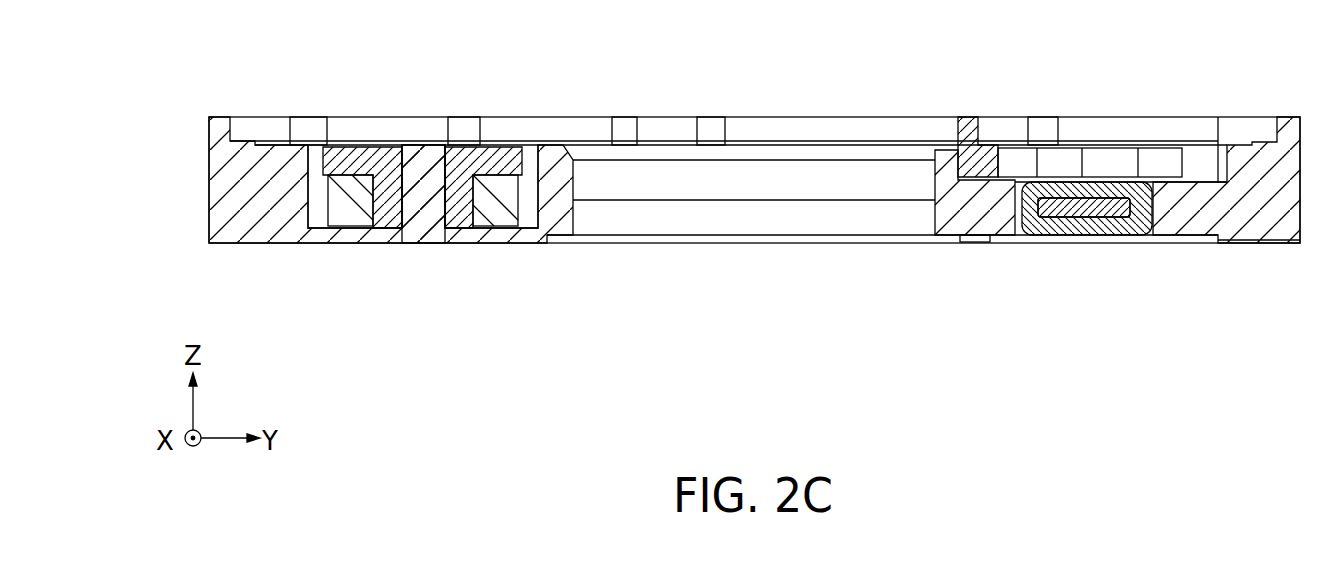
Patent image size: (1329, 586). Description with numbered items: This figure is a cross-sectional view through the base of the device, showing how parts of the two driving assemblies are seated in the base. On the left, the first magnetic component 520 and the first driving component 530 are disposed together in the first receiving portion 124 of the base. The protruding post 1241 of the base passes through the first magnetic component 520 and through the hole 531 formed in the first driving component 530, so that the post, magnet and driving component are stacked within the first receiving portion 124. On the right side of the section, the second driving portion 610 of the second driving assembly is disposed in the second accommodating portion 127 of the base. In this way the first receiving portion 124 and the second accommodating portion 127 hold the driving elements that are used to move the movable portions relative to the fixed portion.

The first receiving portion 124 is at (317, 203).
The protruding post 1241 is at (422, 170).
The first driving component 530 is at (358, 150).
The hole 531 is at (407, 197).
The first magnetic component 520 is at (348, 216).
The second driving portion 610 is at (1073, 210).
The second accommodating portion 127 is at (1143, 220).